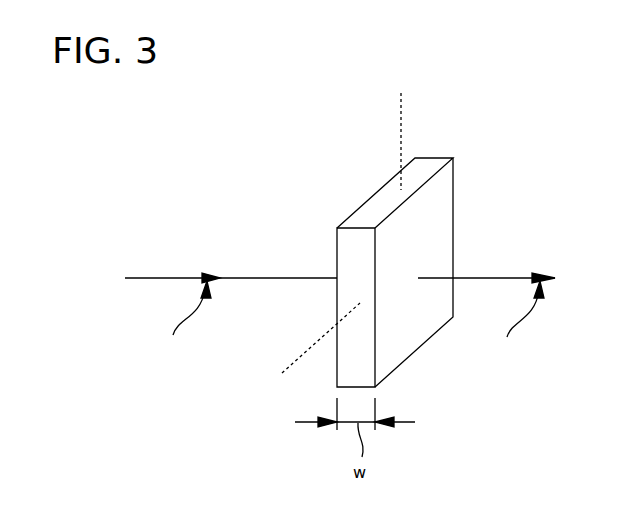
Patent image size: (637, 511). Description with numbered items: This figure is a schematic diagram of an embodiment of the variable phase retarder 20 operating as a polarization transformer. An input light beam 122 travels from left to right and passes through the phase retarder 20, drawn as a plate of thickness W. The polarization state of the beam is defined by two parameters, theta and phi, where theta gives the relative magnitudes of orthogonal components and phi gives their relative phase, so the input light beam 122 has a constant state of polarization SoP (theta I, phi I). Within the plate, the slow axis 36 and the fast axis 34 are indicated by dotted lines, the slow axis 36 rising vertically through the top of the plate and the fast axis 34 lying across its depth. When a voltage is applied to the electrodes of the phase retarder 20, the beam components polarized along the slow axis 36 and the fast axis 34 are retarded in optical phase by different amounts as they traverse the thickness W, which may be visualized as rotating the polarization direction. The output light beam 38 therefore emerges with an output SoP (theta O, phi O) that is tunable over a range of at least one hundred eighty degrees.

The variable phase retarder 20 is at (496, 174).
The slow axis 36 is at (398, 117).
The fast axis 34 is at (302, 356).
The input light beam 122 is at (303, 276).
The output light beam 38 is at (483, 276).